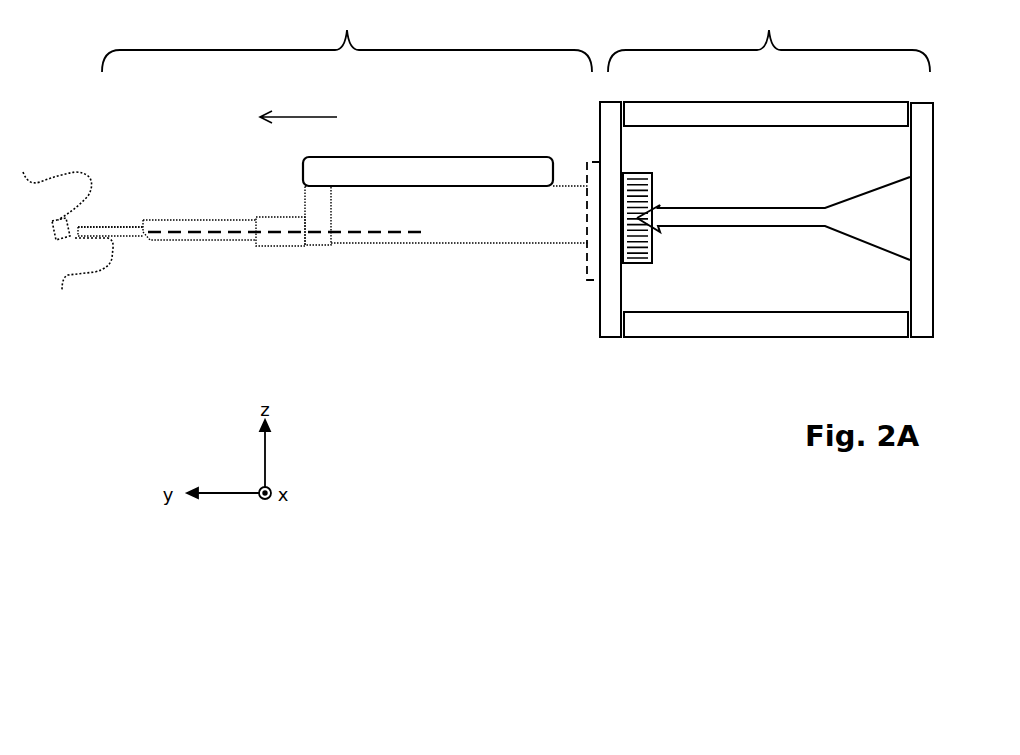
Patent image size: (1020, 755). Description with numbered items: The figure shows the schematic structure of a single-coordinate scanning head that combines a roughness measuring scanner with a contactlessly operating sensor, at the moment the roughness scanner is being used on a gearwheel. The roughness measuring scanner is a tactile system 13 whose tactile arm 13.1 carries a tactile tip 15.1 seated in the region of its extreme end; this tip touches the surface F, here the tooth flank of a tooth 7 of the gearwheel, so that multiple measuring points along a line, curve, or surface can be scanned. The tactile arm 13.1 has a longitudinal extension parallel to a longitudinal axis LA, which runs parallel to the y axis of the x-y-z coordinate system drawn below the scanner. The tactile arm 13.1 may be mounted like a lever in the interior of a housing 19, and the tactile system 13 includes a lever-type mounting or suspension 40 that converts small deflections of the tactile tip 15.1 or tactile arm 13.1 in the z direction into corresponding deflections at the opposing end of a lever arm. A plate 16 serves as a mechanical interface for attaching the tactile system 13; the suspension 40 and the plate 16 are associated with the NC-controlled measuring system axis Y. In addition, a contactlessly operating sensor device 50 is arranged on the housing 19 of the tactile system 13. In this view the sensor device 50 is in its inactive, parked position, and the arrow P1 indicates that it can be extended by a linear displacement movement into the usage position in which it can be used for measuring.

The tactile system 13 is at (347, 37).
The lever-type mounting or suspension 40 is at (766, 169).
The sensor device 50 is at (403, 172).
The housing 19 is at (495, 234).
The plate 16 is at (590, 262).
The tactile arm 13.1 is at (128, 235).
The tactile tip 15.1 is at (97, 212).
The tooth 7 is at (62, 187).
The surface F is at (68, 237).
The longitudinal axis LA is at (345, 235).
The arrow P1 is at (298, 105).